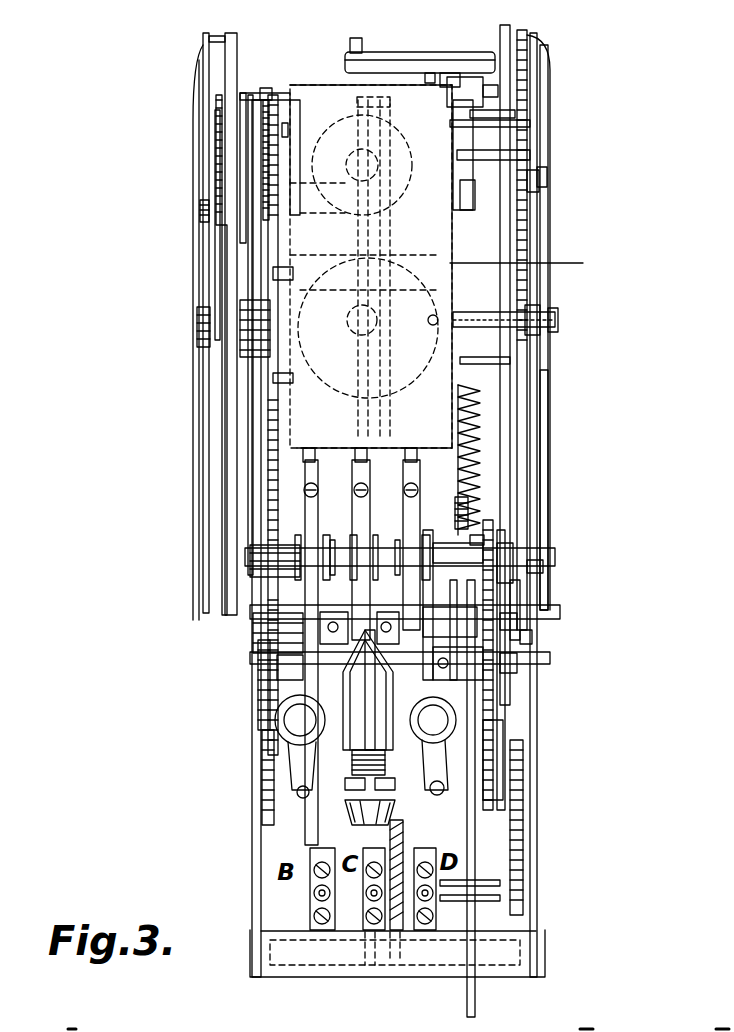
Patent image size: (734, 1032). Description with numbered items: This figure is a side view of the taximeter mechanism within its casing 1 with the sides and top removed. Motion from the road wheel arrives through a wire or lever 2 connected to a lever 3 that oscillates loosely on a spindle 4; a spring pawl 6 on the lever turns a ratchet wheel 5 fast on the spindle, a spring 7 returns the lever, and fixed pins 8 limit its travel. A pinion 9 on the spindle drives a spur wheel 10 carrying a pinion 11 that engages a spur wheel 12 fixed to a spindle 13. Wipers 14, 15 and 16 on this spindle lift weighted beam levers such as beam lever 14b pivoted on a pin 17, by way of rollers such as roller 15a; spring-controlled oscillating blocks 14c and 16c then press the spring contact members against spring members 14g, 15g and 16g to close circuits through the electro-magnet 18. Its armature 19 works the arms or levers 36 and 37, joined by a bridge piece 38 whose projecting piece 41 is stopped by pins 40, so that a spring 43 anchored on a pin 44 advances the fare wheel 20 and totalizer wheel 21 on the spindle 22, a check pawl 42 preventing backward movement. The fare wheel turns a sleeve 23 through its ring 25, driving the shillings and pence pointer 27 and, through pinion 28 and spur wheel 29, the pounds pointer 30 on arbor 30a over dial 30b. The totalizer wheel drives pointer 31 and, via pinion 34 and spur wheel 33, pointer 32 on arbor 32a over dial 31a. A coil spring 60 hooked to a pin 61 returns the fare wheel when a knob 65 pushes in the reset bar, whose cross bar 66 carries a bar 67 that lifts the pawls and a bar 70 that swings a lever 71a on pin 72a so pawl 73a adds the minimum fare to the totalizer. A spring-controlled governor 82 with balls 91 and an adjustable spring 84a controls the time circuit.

The casing 1 is at (231, 35).
The wire or lever 2 is at (470, 853).
The lever 3 is at (500, 592).
The spindle 4 is at (275, 700).
The ratchet wheel 5 is at (495, 538).
The spring pawl 6 is at (520, 640).
The spring 7 is at (475, 445).
The fixed pins 8 is at (500, 585).
The pinion 9 is at (270, 672).
The spur wheel 10 is at (265, 740).
The pinion 11 is at (300, 793).
The spur wheel 12 is at (300, 550).
The spindle 13 is at (305, 570).
The wiper 14 is at (280, 593).
The weighted beam lever 14b is at (260, 468).
The oscillating block 14c is at (290, 522).
The spring member 14g is at (315, 835).
The wiper 15 is at (290, 712).
The roller 15a is at (260, 630).
The spring member 15g is at (265, 805).
The double wiper 16 is at (520, 625).
The oscillating block 16c is at (530, 442).
The spring member 16g is at (530, 828).
The pin 17 is at (270, 638).
The electro-magnet 18 is at (440, 75).
The armature 19 is at (453, 220).
The fare wheel 20 is at (268, 410).
The totalizer wheel 21 is at (530, 472).
The spindle 22 is at (510, 335).
The sleeve 23 is at (265, 345).
The ring or boss 25 is at (255, 375).
The shillings and pence indicator pointer 27 is at (200, 140).
The pinion 28 is at (200, 340).
The spur wheel 29 is at (223, 277).
The pounds indicator pointer 30 is at (203, 122).
The arbor 30a is at (200, 212).
The dial 30b is at (225, 100).
The shillings and pence indicator pointer 31 is at (548, 205).
The dial 31a is at (548, 378).
The pounds indicator pointer 32 is at (540, 230).
The arbor 32a is at (553, 182).
The spur wheel 33 is at (520, 108).
The pinion 34 is at (552, 305).
The arm or lever 36 is at (230, 263).
The arm or lever 37 is at (390, 283).
The bridge piece 38 is at (300, 85).
The pins 40 is at (388, 55).
The projecting piece 41 is at (358, 40).
The check pawl 42 is at (265, 88).
The spring 43 is at (400, 145).
The pin 44 is at (490, 147).
The coil spring 60 is at (247, 247).
The pin 61 is at (250, 232).
The knob 65 is at (324, 130).
The cross bar 66 is at (281, 192).
The bar 67 is at (240, 165).
The bar 70 is at (548, 170).
The lever 71a is at (530, 125).
The pin 72a is at (535, 145).
The pawl 73a is at (487, 123).
The spring-controlled governor 82 is at (515, 770).
The adjustable spring 84a is at (455, 795).
The balls or weights 91 is at (490, 731).